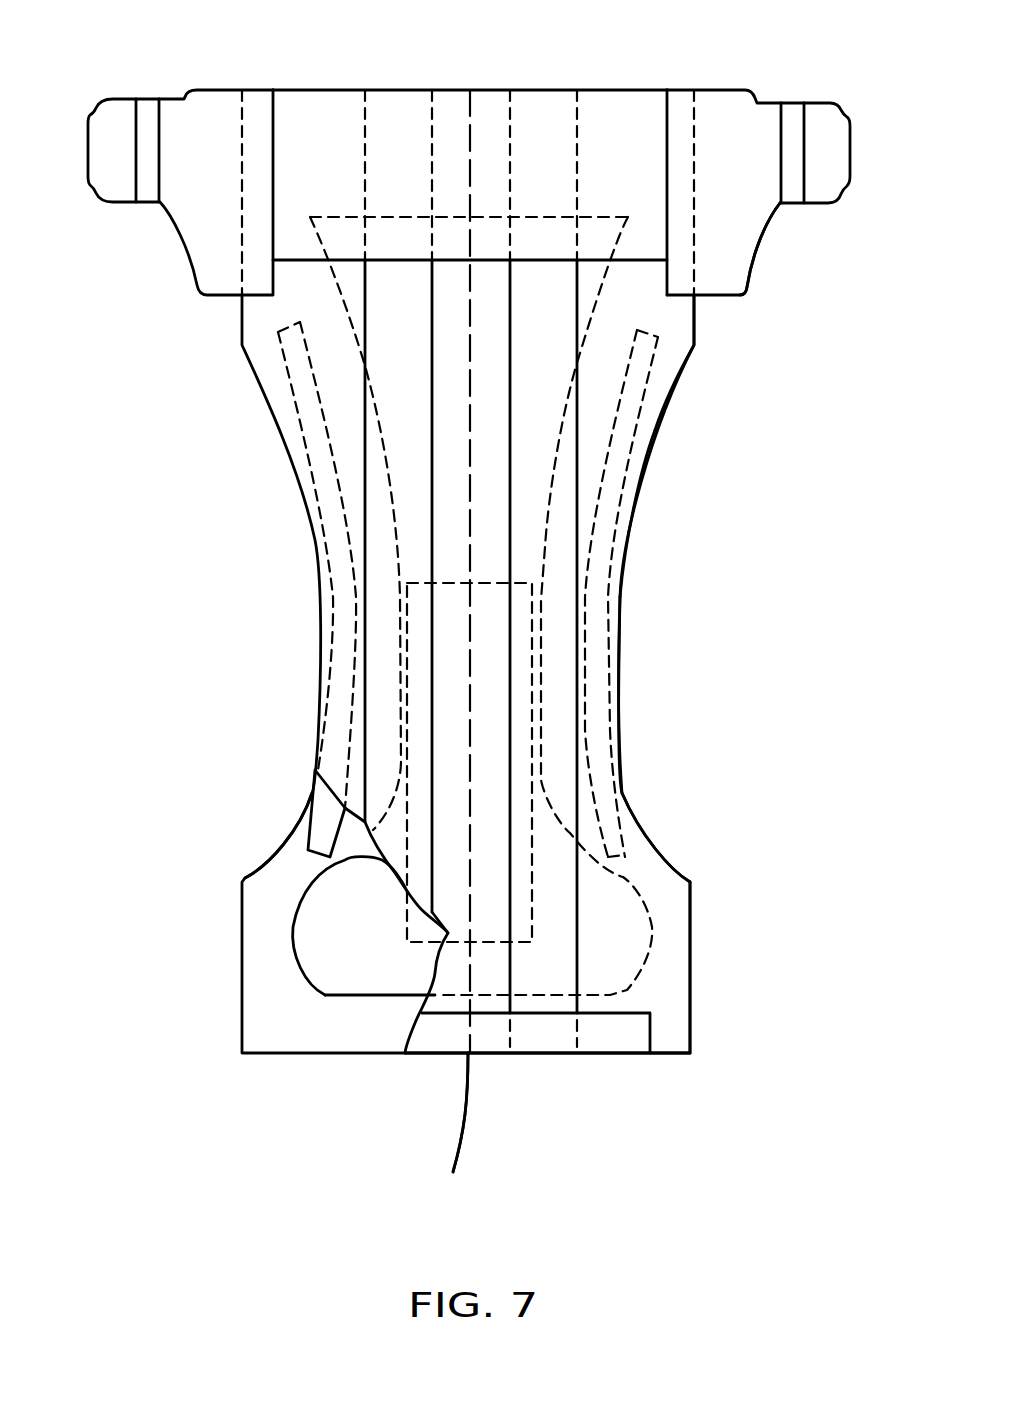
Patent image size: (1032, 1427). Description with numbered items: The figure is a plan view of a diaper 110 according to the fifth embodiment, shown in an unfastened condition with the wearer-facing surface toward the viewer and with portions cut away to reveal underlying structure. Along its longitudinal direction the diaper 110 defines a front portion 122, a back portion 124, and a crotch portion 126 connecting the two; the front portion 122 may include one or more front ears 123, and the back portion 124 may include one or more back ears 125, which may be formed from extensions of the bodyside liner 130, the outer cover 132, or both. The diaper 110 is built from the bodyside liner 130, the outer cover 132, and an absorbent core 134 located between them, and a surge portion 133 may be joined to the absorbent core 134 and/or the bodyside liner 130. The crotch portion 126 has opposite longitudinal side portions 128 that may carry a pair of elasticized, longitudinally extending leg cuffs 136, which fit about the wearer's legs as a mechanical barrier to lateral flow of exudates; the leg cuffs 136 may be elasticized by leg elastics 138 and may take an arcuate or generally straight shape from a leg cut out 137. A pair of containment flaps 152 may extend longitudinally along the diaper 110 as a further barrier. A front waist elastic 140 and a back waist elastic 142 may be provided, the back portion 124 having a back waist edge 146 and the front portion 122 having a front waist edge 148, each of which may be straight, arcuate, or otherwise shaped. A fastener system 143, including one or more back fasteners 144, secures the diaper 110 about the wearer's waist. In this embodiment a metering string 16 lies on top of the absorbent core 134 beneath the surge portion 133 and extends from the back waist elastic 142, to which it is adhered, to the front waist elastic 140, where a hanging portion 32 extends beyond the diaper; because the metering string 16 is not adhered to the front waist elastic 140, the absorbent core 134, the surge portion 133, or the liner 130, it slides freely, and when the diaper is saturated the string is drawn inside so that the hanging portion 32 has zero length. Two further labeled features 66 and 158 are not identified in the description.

The diaper 110 is at (203, 402).
The metering string 16 is at (469, 183).
The hanging portion 32 is at (442, 1152).
The core edge 66 is at (495, 1055).
The front portion 122 is at (667, 923).
The front ears 123 is at (692, 998).
The back portion 124 is at (620, 310).
The back ears 125 is at (727, 232).
The crotch portion 126 is at (490, 540).
The longitudinal side portions 128 is at (655, 395).
The bodyside liner 130 is at (318, 877).
The outer cover 132 is at (272, 925).
The surge portion 133 is at (402, 930).
The absorbent core 134 is at (335, 983).
The leg cuffs 136 is at (615, 577).
The leg cut out 137 is at (623, 748).
The leg elastics 138 is at (327, 820).
The front waist elastic 140 is at (630, 1037).
The back waist elastic 142 is at (613, 110).
The fastener system 143 is at (833, 197).
The back fasteners 144 is at (805, 122).
The back waist edge 146 is at (485, 90).
The front waist edge 148 is at (588, 1055).
The containment flaps 152 is at (400, 400).
The longitudinal centerline 158 is at (487, 1090).